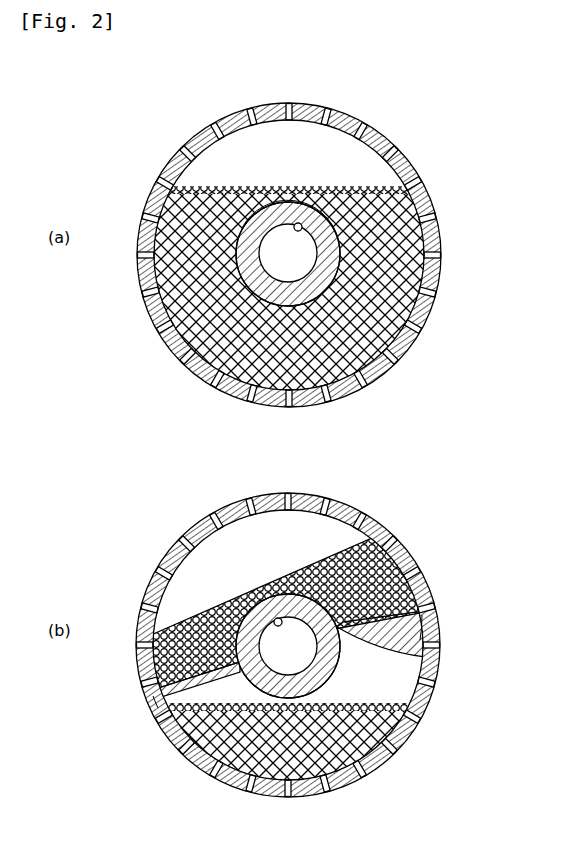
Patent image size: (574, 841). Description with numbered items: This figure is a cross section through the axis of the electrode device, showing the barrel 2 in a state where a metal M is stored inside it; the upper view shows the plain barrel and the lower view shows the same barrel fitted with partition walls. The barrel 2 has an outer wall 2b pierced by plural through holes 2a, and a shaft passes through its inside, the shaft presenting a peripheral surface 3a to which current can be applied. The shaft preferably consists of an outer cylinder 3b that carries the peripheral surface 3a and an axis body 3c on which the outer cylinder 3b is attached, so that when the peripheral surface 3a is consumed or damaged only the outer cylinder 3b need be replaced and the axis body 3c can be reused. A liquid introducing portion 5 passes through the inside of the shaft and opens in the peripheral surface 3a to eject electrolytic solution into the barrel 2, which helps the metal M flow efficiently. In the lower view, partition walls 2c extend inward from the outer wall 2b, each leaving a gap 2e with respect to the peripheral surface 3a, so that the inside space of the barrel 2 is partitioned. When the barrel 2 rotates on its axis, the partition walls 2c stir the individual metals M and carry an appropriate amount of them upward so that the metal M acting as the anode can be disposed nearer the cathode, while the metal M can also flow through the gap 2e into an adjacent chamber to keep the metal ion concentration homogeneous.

The barrel 2 is at (285, 434).
The through holes 2a is at (322, 108).
The outer wall 2b is at (375, 129).
The partition walls 2c is at (425, 628).
The gap 2e is at (427, 657).
The peripheral surface 3a is at (290, 385).
The outer cylinder 3b is at (312, 253).
The axis body 3c is at (302, 226).
The liquid introducing portion 5 is at (322, 190).
The metal M is at (163, 191).